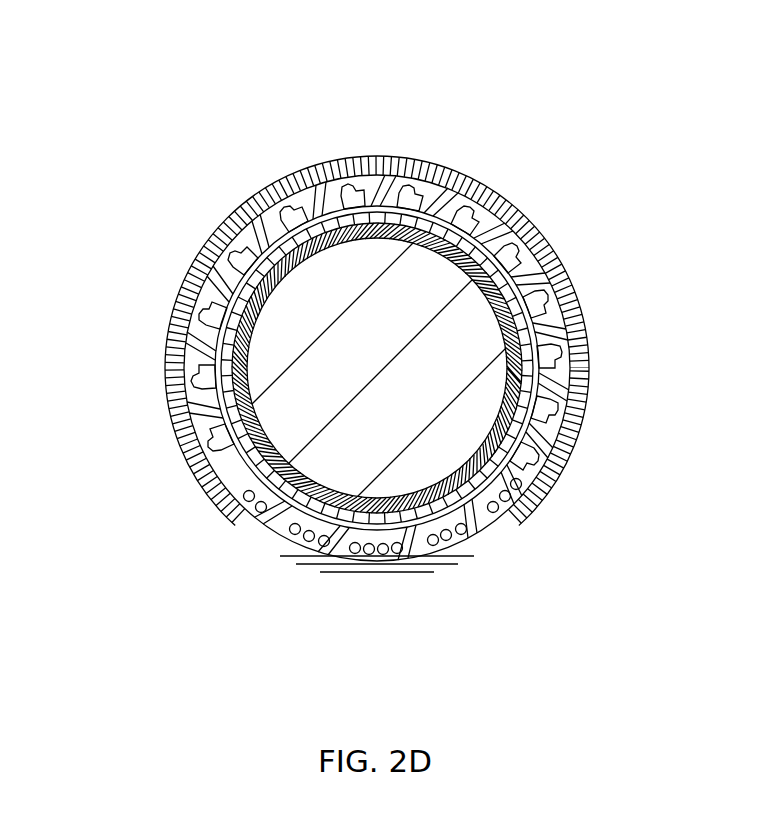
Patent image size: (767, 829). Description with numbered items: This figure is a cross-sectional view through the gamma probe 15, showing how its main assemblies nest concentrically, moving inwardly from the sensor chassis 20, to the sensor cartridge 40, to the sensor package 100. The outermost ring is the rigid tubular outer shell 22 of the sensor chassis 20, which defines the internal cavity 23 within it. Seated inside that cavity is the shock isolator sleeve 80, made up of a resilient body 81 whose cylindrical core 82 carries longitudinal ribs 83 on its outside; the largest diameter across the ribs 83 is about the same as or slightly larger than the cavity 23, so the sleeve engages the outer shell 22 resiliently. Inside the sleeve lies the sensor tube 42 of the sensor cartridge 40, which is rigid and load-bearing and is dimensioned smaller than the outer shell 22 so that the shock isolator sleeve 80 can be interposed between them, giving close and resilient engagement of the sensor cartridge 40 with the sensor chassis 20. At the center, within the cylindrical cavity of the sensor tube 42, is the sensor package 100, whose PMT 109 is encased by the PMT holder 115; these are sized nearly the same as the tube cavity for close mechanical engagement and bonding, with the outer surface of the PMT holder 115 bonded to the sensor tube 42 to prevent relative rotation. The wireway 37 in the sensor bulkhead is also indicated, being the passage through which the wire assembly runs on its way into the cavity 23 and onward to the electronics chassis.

The gamma probe 15 is at (522, 113).
The sensor chassis 20 is at (228, 187).
The outer shell 22 is at (505, 212).
The internal cavity 23 is at (540, 230).
The sensor cartridge 40 is at (308, 208).
The sensor tube 42 is at (513, 427).
The shock isolator sleeve 80 is at (192, 297).
The resilient body 81 is at (533, 303).
The cylindrical core 82 is at (547, 360).
The longitudinal ribs 83 is at (560, 342).
The sensor package 100 is at (389, 217).
The PMT 109 is at (343, 473).
The PMT holder 115 is at (490, 487).
The wireway 37 is at (317, 545).